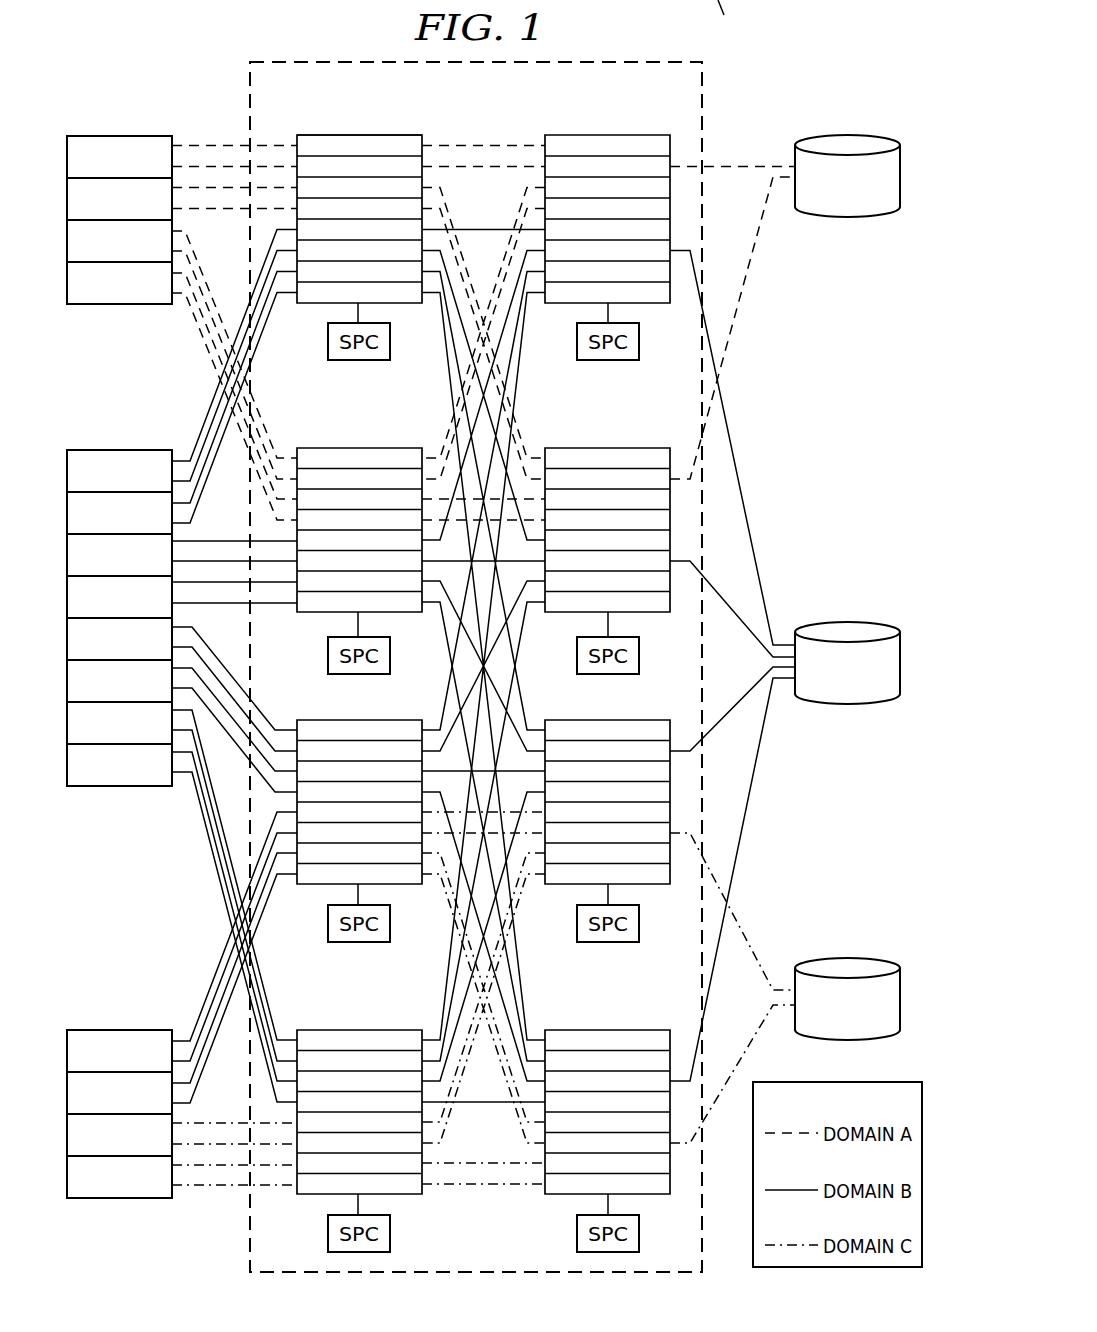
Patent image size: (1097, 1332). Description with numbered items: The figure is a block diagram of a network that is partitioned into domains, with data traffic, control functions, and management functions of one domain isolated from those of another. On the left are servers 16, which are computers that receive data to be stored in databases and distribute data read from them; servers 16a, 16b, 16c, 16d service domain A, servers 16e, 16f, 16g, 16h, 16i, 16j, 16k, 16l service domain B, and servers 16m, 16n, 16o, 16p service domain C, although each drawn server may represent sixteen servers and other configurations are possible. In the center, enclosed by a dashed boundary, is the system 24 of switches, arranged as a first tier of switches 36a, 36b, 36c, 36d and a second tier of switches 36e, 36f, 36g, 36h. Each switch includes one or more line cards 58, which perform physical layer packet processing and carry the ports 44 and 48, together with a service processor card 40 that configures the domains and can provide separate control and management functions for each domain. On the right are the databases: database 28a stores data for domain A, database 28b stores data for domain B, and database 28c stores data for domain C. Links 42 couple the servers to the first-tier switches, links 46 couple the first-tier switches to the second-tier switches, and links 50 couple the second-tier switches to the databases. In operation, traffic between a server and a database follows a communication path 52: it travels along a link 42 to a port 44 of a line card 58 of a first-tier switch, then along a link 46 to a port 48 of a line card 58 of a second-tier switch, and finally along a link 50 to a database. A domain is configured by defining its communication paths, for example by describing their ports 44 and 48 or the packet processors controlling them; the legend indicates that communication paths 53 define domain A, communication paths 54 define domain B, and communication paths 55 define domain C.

The servers 16 is at (118, 128).
The server 16a is at (141, 170).
The server 16b is at (141, 212).
The server 16c is at (141, 254).
The server 16d is at (141, 296).
The server 16e is at (141, 484).
The server 16f is at (141, 526).
The server 16g is at (141, 568).
The server 16h is at (141, 610).
The server 16i is at (141, 652).
The server 16j is at (141, 694).
The server 16k is at (141, 736).
The server 16l is at (141, 778).
The server 16m is at (144, 1064).
The server 16n is at (141, 1106).
The server 16o is at (141, 1148).
The server 16p is at (141, 1190).
The system 24 is at (330, 62).
The database 28a is at (847, 135).
The database 28b is at (848, 620).
The database 28c is at (848, 958).
The switch 36a is at (397, 135).
The switch 36b is at (344, 448).
The switch 36c is at (314, 720).
The switch 36d is at (344, 1030).
The switch 36e is at (606, 135).
The switch 36f is at (611, 448).
The switch 36g is at (561, 720).
The switch 36h is at (606, 1030).
The service processor card 40 is at (659, 1243).
The links 42 is at (232, 211).
The ports 44 is at (291, 133).
The links 46 is at (465, 170).
The ports 48 is at (543, 135).
The links 50 is at (748, 270).
The communication paths 52 is at (734, 163).
The communication paths 53 is at (789, 1131).
The communication paths 54 is at (793, 1188).
The communication paths 55 is at (789, 1243).
The line cards 58 is at (344, 133).